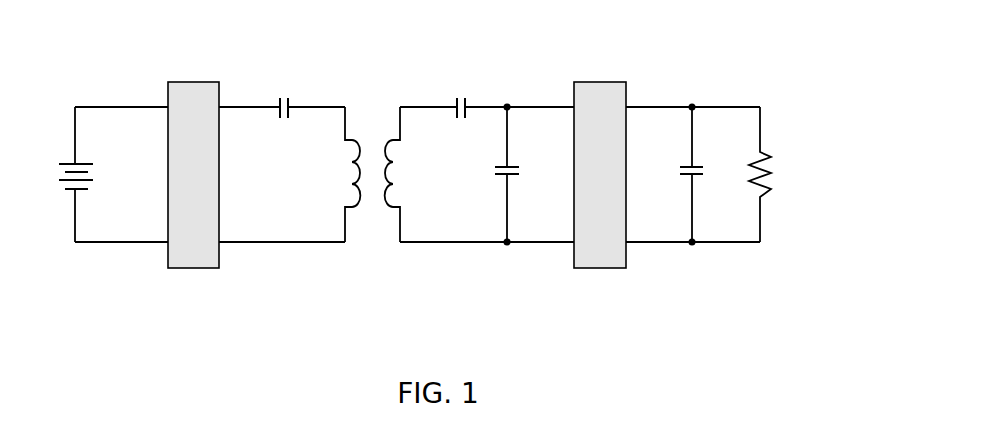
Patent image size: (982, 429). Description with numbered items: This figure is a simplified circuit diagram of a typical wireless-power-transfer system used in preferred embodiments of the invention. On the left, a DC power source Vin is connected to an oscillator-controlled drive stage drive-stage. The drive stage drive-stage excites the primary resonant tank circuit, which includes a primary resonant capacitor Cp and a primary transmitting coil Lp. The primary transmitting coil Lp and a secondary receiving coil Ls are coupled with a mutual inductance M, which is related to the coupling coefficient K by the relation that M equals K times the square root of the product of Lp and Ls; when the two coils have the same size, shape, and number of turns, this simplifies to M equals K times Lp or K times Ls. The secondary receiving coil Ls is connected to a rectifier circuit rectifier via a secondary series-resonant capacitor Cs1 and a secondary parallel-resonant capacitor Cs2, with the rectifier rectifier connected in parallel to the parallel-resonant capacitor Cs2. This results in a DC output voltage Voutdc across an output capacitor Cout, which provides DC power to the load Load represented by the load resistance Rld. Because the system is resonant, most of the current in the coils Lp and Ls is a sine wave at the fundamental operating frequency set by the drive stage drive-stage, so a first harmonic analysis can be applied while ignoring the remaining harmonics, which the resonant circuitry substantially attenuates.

The DC power source Vin is at (67, 140).
The oscillator-controlled drive stage drive-stage is at (193, 175).
The primary resonant capacitor Cp is at (279, 98).
The primary transmitting coil Lp is at (336, 174).
The secondary receiving coil Ls is at (405, 174).
The mutual inductance M is at (398, 88).
The secondary series-resonant capacitor Cs1 is at (459, 98).
The secondary parallel-resonant capacitor Cs2 is at (518, 175).
The rectifier circuit rectifier is at (600, 175).
The output capacitor Cout is at (672, 175).
The load Rld is at (742, 174).
The load Load is at (720, 87).
The DC output voltage Voutdc is at (820, 174).